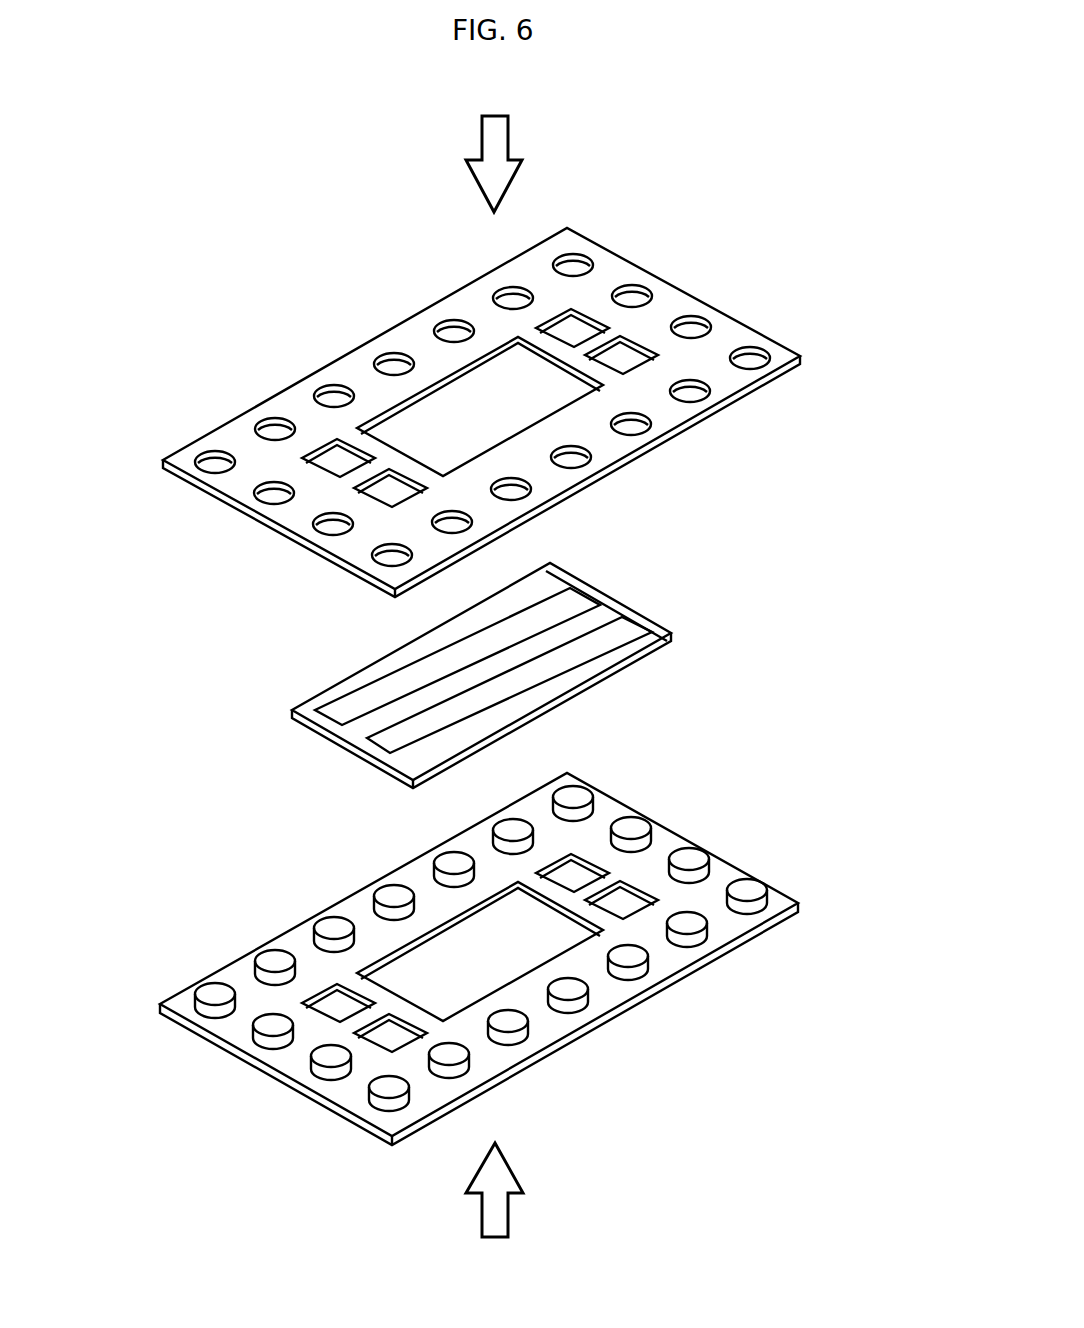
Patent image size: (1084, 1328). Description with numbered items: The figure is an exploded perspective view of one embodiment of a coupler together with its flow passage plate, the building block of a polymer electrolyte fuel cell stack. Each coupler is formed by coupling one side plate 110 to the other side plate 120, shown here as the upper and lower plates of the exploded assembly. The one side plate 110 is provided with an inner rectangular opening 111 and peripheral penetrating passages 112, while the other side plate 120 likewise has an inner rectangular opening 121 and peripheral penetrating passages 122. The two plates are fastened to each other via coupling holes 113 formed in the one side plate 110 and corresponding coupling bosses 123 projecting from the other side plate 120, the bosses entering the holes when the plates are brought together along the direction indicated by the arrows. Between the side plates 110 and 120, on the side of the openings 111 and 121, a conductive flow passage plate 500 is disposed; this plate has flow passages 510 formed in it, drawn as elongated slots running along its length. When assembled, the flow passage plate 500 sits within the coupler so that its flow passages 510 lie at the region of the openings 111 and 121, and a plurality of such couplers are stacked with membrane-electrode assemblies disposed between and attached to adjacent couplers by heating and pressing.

The one side plate 110 is at (800, 357).
The inner rectangular opening 111 is at (477, 364).
The peripheral penetrating passages 112 is at (578, 308).
The coupling holes 113 is at (689, 323).
The other side plate 120 is at (790, 915).
The inner rectangular opening 121 is at (410, 938).
The peripheral penetrating passages 122 is at (569, 860).
The coupling bosses 123 is at (775, 887).
The conductive flow passage plate 500 is at (684, 607).
The flow passages 510 is at (541, 583).